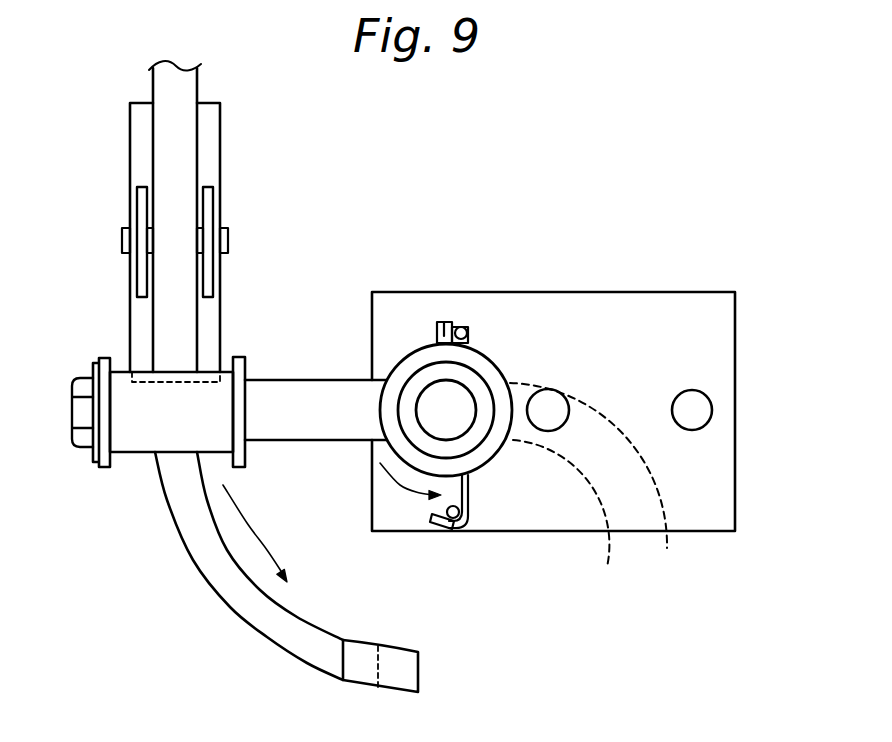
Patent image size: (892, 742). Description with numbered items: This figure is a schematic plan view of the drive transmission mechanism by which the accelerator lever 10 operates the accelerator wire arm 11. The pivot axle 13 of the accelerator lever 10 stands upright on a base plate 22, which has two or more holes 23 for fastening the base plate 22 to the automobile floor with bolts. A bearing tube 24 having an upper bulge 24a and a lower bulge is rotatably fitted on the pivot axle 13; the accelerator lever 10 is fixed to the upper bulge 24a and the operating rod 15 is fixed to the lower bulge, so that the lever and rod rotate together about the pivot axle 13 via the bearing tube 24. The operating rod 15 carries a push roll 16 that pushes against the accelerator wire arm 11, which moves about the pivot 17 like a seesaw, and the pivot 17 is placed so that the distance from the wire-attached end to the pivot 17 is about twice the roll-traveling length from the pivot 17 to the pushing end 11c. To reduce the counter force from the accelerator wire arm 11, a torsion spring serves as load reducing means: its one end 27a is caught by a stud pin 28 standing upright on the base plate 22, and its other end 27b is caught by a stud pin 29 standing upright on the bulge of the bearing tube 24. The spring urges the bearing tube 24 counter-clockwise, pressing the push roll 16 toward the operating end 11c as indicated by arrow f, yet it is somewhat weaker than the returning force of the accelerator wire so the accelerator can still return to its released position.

The accelerator lever 10 is at (667, 547).
The accelerator wire arm 11 is at (172, 328).
The pushing end 11c is at (272, 632).
The pivot axle 13 is at (457, 408).
The operating rod 15 is at (298, 380).
The push roll 16 is at (122, 458).
The pivot 17 is at (122, 240).
The base plate 22 is at (715, 303).
The holes 23 is at (548, 405).
The bearing tube 24 is at (472, 378).
The upper bulge 24a is at (493, 442).
The one end of torsion spring 27a is at (437, 528).
The upper spring end 27b is at (458, 327).
The stud pin 28 is at (455, 532).
The stud pin 29 is at (445, 322).